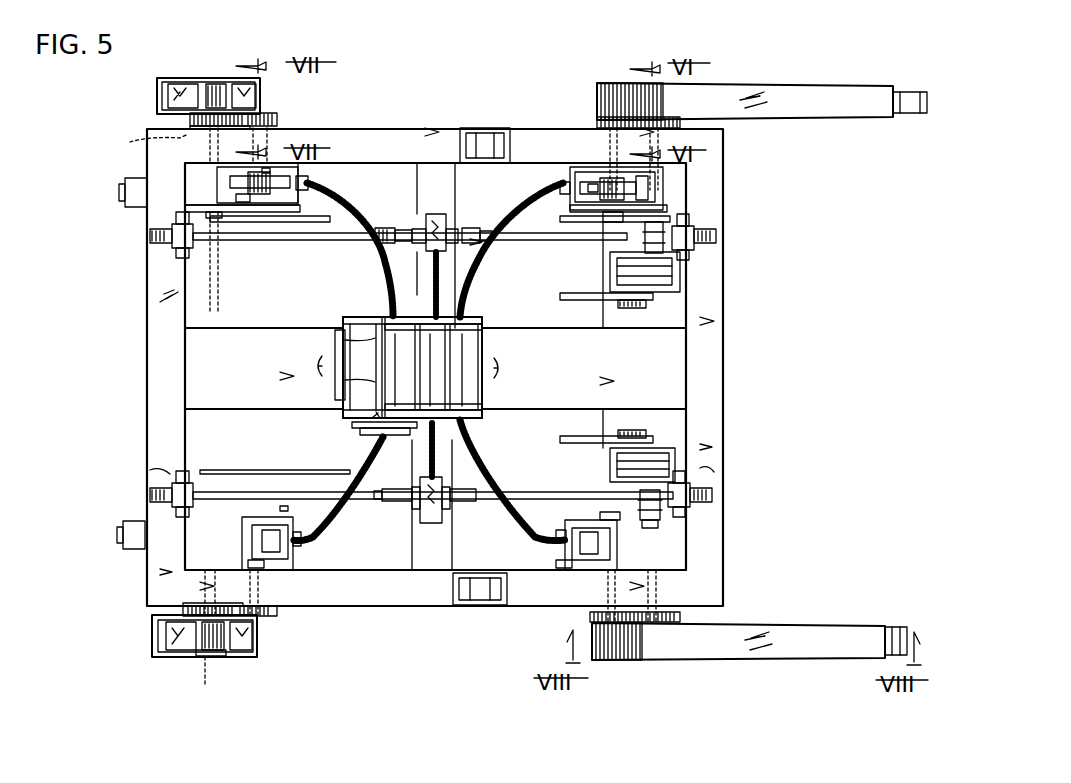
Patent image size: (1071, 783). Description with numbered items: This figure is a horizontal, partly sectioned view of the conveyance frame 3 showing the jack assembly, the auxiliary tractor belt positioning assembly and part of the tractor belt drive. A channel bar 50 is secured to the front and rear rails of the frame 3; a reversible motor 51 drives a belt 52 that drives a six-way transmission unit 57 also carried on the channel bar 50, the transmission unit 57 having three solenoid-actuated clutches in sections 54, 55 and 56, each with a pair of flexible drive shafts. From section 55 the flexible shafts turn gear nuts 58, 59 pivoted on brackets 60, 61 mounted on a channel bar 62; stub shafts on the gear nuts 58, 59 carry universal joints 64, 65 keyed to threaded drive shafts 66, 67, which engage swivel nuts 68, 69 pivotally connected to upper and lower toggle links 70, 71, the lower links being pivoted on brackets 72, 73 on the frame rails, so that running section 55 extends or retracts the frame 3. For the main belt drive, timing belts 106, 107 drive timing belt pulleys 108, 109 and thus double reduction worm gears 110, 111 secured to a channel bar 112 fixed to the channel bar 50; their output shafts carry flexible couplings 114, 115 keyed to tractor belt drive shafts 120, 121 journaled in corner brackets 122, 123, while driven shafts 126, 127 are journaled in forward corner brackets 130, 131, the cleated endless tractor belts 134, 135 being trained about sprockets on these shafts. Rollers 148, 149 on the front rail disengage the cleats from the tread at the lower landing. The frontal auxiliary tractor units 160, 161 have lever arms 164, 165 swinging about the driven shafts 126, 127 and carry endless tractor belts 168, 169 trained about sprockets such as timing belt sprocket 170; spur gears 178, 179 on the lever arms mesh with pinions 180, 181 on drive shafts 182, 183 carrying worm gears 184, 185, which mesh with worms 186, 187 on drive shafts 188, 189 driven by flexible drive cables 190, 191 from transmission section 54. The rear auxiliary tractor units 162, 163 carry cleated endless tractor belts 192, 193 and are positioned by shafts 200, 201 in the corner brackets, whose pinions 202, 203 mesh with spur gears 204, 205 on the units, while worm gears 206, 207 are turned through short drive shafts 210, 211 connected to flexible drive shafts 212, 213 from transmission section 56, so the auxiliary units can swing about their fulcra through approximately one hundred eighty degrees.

The frame 3 is at (152, 360).
The channel bar 50 is at (276, 328).
The reversible motor 51 is at (348, 317).
The belt 52 is at (374, 440).
The transmission section 54 is at (338, 335).
The transmission section 55 is at (344, 386).
The transmission section 56 is at (480, 391).
The six-way transmission unit 57 is at (414, 370).
The gear nut 58 is at (414, 509).
The gear nut 59 is at (414, 210).
The bracket 60 is at (447, 522).
The bracket 61 is at (443, 214).
The channel bar 62 is at (420, 180).
The universal joint 64 is at (402, 504).
The universal joint 65 is at (408, 229).
The threaded drive shaft 66 is at (258, 493).
The threaded drive shaft 67 is at (376, 240).
The swivel nut 68 is at (182, 494).
The swivel nut 69 is at (172, 224).
The upper toggle links 70 is at (174, 506).
The lower toggle links 71 is at (178, 252).
The bracket 72 is at (178, 476).
The bracket 73 is at (178, 256).
The timing belt 106 is at (568, 434).
The timing belt 107 is at (572, 283).
The timing belt pulley 108 is at (616, 432).
The timing belt pulley 109 is at (640, 310).
The parallel shaft double reduction worm gear 110 is at (679, 452).
The parallel shaft double reduction worm gear 111 is at (684, 278).
The channel bar 112 is at (610, 322).
The flexible coupling 114 is at (666, 512).
The flexible coupling 115 is at (691, 214).
The tractor belt drive shaft 120 is at (661, 530).
The tractor belt drive shaft 121 is at (673, 222).
The corner bracket 122 is at (556, 559).
The corner bracket 123 is at (590, 187).
The driven shaft 126 is at (206, 686).
The driven shaft 127 is at (177, 220).
The forward corner bracket 130 is at (346, 472).
The forward corner bracket 131 is at (298, 186).
The endless tractor belt 134 is at (468, 600).
The endless tractor belt 135 is at (492, 118).
The roller 148 is at (122, 536).
The roller 149 is at (128, 191).
The auxiliary tractor unit 160 is at (140, 628).
The auxiliary tractor unit 161 is at (140, 90).
The auxiliary tractor unit 162 is at (822, 676).
The auxiliary tractor unit 163 is at (836, 134).
The lever arm 164 is at (166, 653).
The lever arm 165 is at (152, 84).
The endless tractor belt 168 is at (255, 642).
The endless tractor belt 169 is at (265, 95).
The timing belt sprocket 170 is at (234, 656).
The spur gear 178 is at (184, 606).
The spur gear 179 is at (190, 122).
The pinion 180 is at (275, 616).
The pinion 181 is at (278, 119).
The drive shaft 182 is at (261, 576).
The drive shaft 183 is at (248, 204).
The worm gear 184 is at (284, 508).
The worm gear 185 is at (216, 218).
The worm 186 is at (312, 574).
The worm 187 is at (293, 198).
The drive shaft 188 is at (300, 548).
The drive shaft 189 is at (278, 170).
The flexible drive cable 190 is at (384, 466).
The flexible drive cable 191 is at (394, 284).
The cleated endless tractor belt 192 is at (898, 622).
The cleated endless tractor belt 193 is at (916, 114).
The shaft 200 is at (598, 518).
The shaft 201 is at (582, 214).
The pinion 202 is at (592, 619).
The pinion 203 is at (598, 124).
The spur gear 204 is at (680, 622).
The spur gear 205 is at (680, 128).
The worm gear 206 is at (580, 570).
The worm gear 207 is at (610, 168).
The short drive shaft 210 is at (568, 576).
The short drive shaft 211 is at (548, 172).
The flexible drive shaft 212 is at (466, 452).
The flexible drive shaft 213 is at (474, 268).